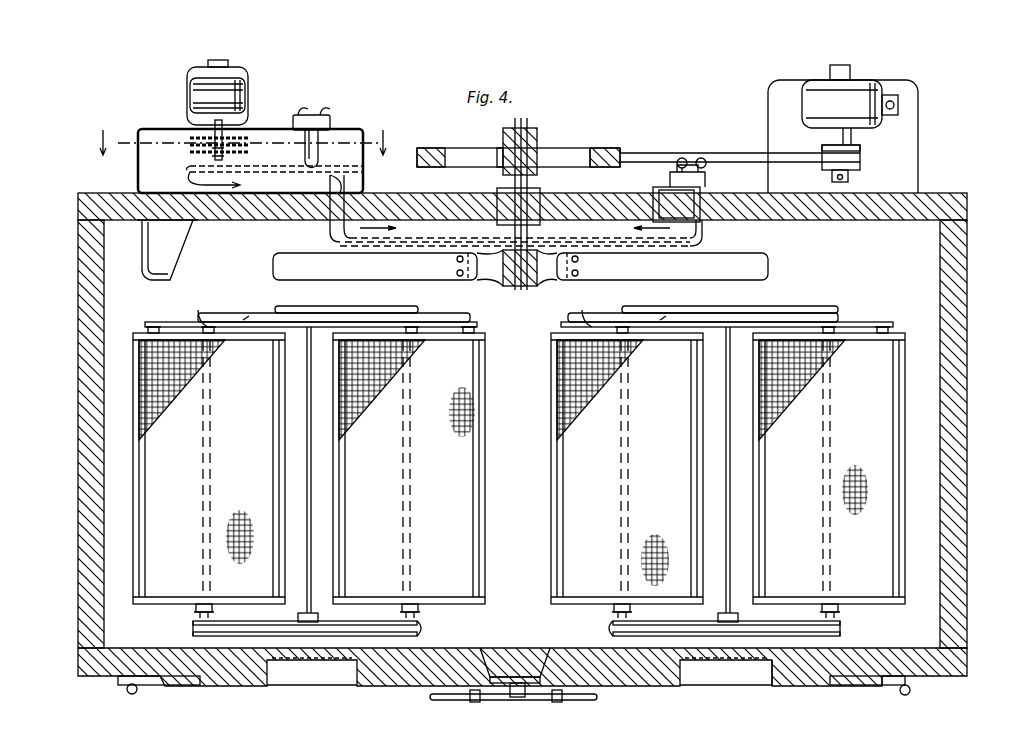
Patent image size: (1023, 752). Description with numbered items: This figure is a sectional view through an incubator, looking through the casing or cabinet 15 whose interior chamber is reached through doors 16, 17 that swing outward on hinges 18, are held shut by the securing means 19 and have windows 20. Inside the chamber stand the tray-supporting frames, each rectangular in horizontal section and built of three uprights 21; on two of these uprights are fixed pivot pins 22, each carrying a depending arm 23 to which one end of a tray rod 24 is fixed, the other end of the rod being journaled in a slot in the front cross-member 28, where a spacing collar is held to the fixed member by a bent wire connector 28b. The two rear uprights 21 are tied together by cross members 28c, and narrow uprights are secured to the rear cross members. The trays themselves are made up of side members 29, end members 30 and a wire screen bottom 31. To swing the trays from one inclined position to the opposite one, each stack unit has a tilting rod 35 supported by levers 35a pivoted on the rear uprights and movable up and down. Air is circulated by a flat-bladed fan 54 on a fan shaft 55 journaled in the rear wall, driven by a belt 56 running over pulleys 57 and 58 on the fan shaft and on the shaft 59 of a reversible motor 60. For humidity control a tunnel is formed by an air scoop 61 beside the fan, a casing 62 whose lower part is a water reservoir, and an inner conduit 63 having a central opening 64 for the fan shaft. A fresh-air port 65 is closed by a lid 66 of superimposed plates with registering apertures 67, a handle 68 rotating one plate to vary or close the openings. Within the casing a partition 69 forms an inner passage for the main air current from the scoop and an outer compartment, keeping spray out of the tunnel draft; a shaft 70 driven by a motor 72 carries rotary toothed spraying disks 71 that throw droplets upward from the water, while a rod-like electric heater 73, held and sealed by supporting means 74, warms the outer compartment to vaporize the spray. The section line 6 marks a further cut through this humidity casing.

The section line 6- 6 is at (244, 142).
The casing or cabinet 15 is at (968, 470).
The door 16 is at (385, 686).
The door 17 is at (795, 686).
The hinge 18 is at (126, 688).
The door securing means 19 is at (518, 700).
The window 20 is at (310, 662).
The upright 21 is at (210, 326).
The pivot pin 22 is at (243, 318).
The depending arm 23 is at (598, 305).
The tray rod 24 is at (205, 553).
The cross-member 28 is at (250, 636).
The bent wire connector 28b is at (420, 636).
The cross member 28c is at (388, 298).
The side member 29 is at (140, 505).
The end member 30 is at (135, 335).
The wire screen bottom 31 is at (470, 410).
The tilting rod 35 is at (145, 324).
The lever 35a is at (160, 320).
The fan 54 is at (565, 282).
The fan shaft 55 is at (528, 122).
The belt 56 is at (720, 155).
The pulley 57 is at (600, 150).
The pulley 58 is at (848, 173).
The motor shaft 59 is at (860, 150).
The reversible motor 60 is at (860, 80).
The air scoop 61 is at (170, 258).
The casing 62 is at (150, 129).
The inner conduit 63 is at (333, 236).
The opening 64 is at (545, 243).
The port 65 is at (703, 232).
The lid 66 is at (700, 192).
The aperture 67 is at (702, 160).
The handle 68 is at (680, 158).
The partition 69 is at (280, 172).
The shaft 70 is at (205, 131).
The rotary toothed spraying disk 71 is at (192, 148).
The motor 72 is at (240, 95).
The electric heater 73 is at (316, 152).
The supporting and sealing means 74 is at (322, 120).